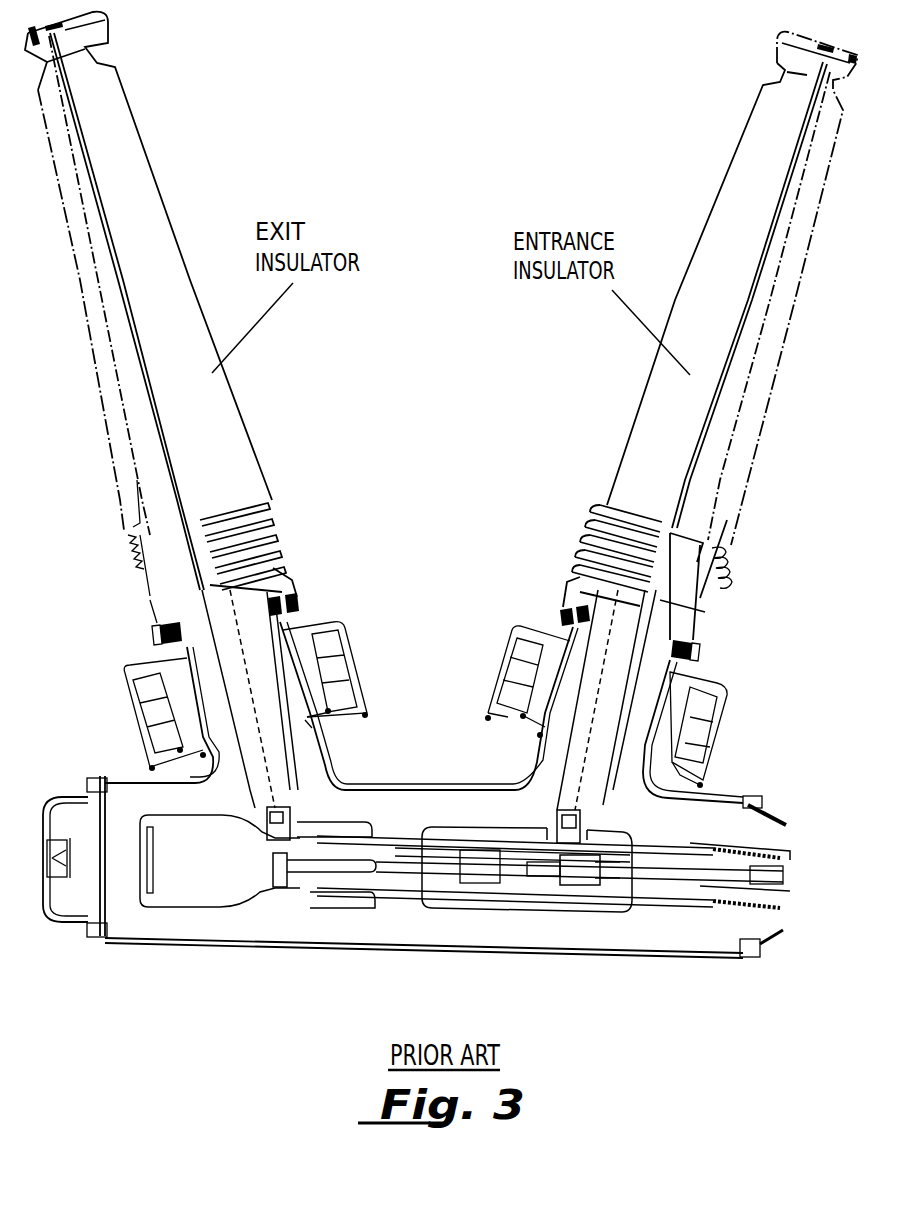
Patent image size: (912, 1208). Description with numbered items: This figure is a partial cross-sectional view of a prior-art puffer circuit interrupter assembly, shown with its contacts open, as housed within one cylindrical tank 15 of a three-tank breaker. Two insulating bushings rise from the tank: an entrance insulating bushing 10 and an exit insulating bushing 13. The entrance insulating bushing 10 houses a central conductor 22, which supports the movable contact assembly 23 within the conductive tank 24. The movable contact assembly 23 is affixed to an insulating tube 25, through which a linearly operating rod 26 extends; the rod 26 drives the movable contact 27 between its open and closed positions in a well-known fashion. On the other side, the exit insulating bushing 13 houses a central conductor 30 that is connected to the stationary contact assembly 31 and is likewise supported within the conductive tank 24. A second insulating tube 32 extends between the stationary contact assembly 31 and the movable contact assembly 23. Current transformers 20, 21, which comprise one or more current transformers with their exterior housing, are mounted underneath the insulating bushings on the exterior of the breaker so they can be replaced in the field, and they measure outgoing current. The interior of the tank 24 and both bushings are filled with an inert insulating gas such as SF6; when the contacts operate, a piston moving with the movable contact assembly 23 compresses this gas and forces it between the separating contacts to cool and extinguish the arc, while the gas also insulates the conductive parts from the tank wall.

The entrance insulating bushing 10 is at (643, 418).
The exit insulating bushing 13 is at (230, 435).
The cylindrical tank 15 is at (437, 953).
The current transformer 20 is at (730, 695).
The current transformer 21 is at (347, 648).
The central conductor 22 is at (600, 782).
The movable contact assembly 23 is at (538, 923).
The conductive tank 24 is at (627, 947).
The insulating tube 25 is at (663, 845).
The linearly operating rod 26 is at (698, 888).
The movable contact 27 is at (476, 830).
The central conductor 30 is at (260, 767).
The stationary contact assembly 31 is at (320, 913).
The insulating tube 32 is at (398, 830).